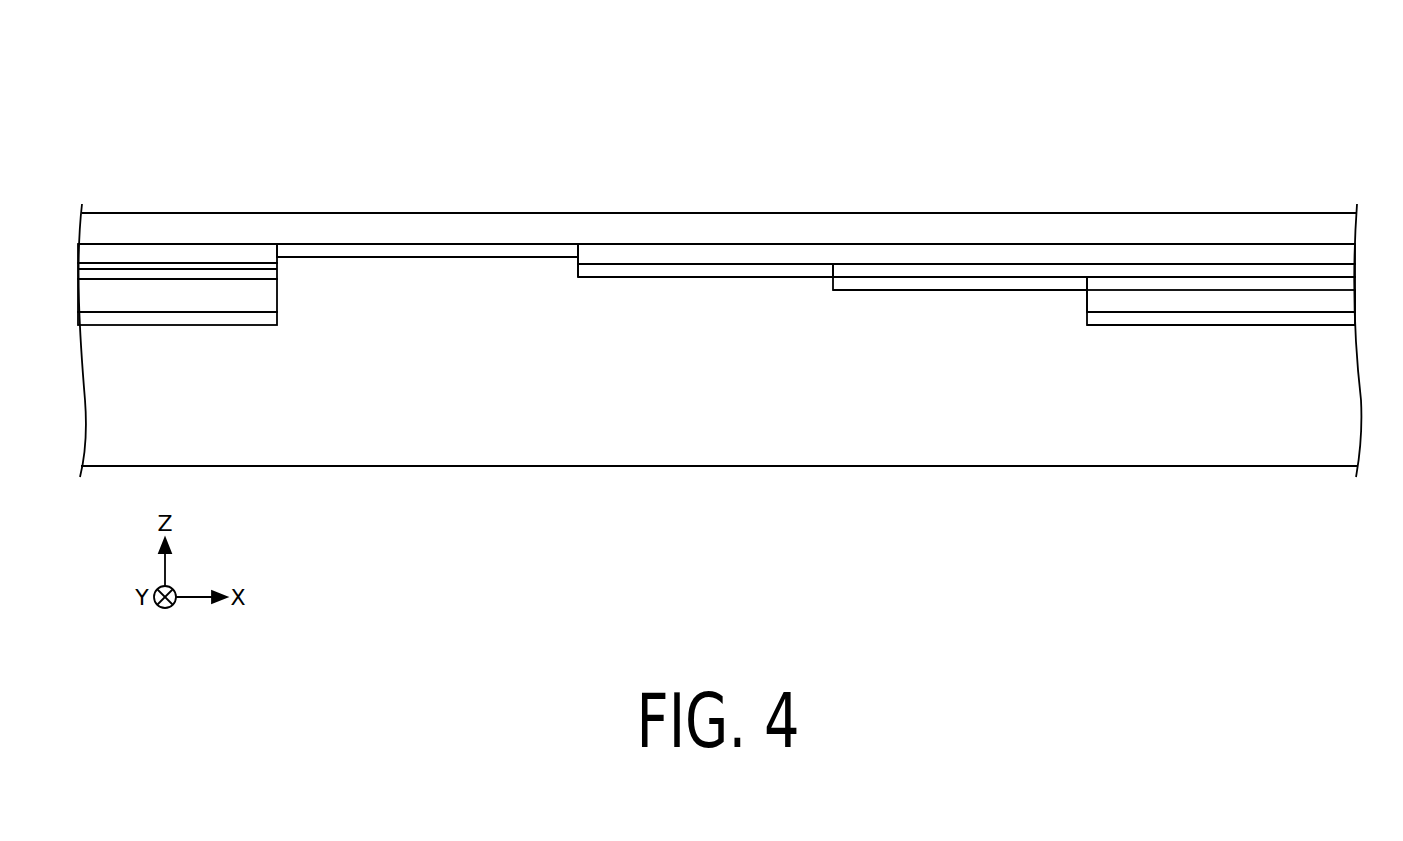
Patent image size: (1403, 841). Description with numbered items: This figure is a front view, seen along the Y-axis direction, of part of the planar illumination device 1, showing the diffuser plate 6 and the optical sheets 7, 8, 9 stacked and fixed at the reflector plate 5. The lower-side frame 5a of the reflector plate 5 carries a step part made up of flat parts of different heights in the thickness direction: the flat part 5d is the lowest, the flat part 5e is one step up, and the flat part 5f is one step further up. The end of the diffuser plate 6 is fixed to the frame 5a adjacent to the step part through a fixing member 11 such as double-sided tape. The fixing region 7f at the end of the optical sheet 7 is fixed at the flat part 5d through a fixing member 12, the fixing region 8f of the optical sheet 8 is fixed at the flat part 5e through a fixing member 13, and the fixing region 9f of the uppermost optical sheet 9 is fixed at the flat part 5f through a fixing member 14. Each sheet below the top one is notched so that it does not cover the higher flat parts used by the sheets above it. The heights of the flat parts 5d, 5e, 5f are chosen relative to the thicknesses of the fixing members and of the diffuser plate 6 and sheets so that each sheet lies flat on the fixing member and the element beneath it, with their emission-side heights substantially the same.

The planar illumination device 1 is at (945, 72).
The reflector plate 5 is at (473, 332).
The frame 5a is at (1314, 323).
The flat part 5d is at (1050, 290).
The flat part 5e is at (790, 277).
The flat part 5f is at (528, 257).
The diffuser plate 6 is at (234, 297).
The optical sheet 7 is at (193, 274).
The fixing region 7f is at (1001, 277).
The optical sheet 8 is at (151, 257).
The fixing region 8f is at (737, 263).
The optical sheet 9 is at (378, 232).
The fixing region 9f is at (425, 243).
The fixing member 11 is at (1137, 318).
The fixing member 12 is at (888, 283).
The fixing member 13 is at (612, 275).
The fixing member 14 is at (323, 252).